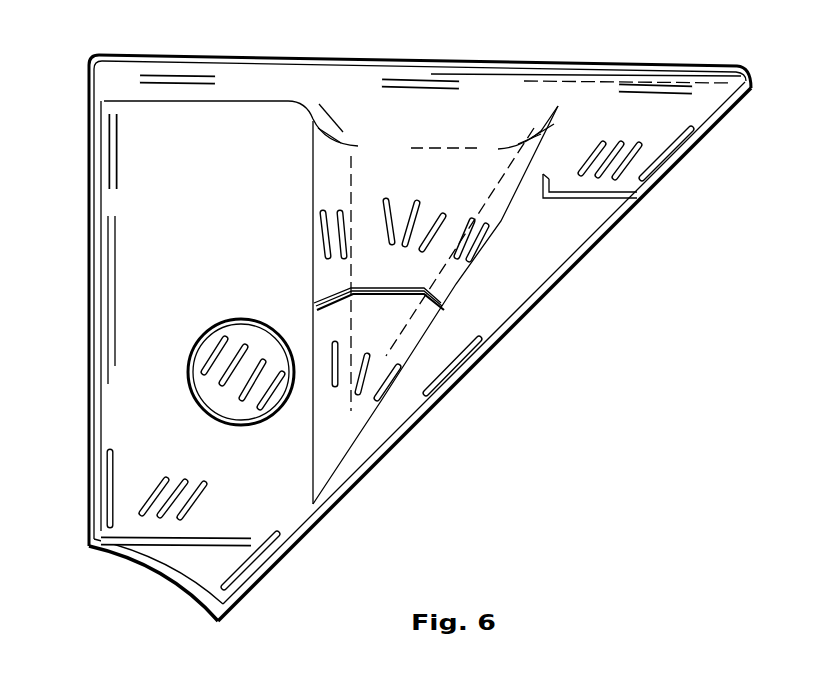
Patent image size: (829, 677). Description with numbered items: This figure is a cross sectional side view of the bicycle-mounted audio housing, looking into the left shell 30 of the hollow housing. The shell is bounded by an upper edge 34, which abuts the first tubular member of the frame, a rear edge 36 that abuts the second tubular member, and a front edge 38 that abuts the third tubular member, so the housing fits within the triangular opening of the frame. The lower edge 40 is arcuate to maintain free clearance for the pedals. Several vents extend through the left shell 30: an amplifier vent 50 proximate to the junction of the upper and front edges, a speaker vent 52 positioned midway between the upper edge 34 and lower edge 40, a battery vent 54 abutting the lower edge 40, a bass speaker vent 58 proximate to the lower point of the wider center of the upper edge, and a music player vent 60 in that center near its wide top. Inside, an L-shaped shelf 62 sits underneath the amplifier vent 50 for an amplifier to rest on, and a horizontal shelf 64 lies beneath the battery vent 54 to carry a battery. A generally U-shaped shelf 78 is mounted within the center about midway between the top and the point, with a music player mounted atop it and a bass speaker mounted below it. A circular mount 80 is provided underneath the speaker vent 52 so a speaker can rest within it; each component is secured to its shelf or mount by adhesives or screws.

The left shell 30 is at (512, 98).
The upper edge 34 is at (467, 61).
The rear edge 36 is at (86, 387).
The front edge 38 is at (585, 258).
The lower edge 40 is at (125, 558).
The amplifier vent 50 is at (612, 163).
The speaker vent 52 is at (262, 381).
The battery vent 54 is at (153, 497).
The bass speaker vent 58 is at (370, 357).
The music player vent 60 is at (412, 212).
The L-shaped shelf 62 is at (597, 199).
The horizontal shelf 64 is at (202, 545).
The U-shaped shelf 78 is at (403, 287).
The circular mount 80 is at (262, 420).